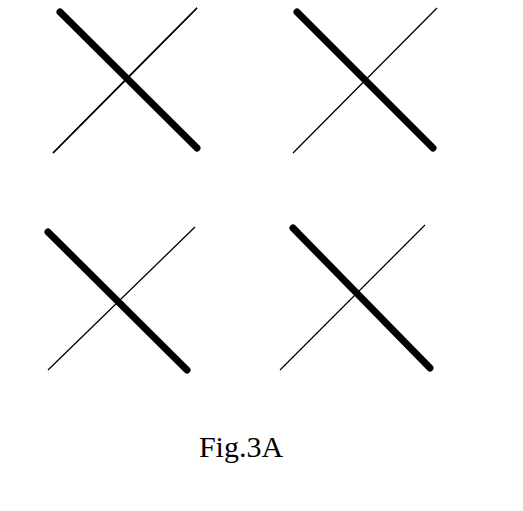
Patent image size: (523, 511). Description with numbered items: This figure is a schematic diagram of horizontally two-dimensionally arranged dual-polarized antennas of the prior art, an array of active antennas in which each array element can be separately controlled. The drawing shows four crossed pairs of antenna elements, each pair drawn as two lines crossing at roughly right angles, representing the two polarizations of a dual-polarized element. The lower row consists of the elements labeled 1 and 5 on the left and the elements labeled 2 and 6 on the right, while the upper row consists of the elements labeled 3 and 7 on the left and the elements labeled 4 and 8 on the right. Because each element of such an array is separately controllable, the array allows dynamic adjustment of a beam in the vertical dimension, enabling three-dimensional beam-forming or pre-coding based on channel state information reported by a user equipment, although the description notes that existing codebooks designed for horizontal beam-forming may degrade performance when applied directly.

The first port 1 is at (120, 317).
The second port 2 is at (350, 316).
The third port 3 is at (122, 98).
The fourth port 4 is at (362, 98).
The fifth port 5 is at (120, 319).
The sixth port 6 is at (364, 318).
The seventh port 7 is at (131, 100).
The eighth port 8 is at (367, 100).